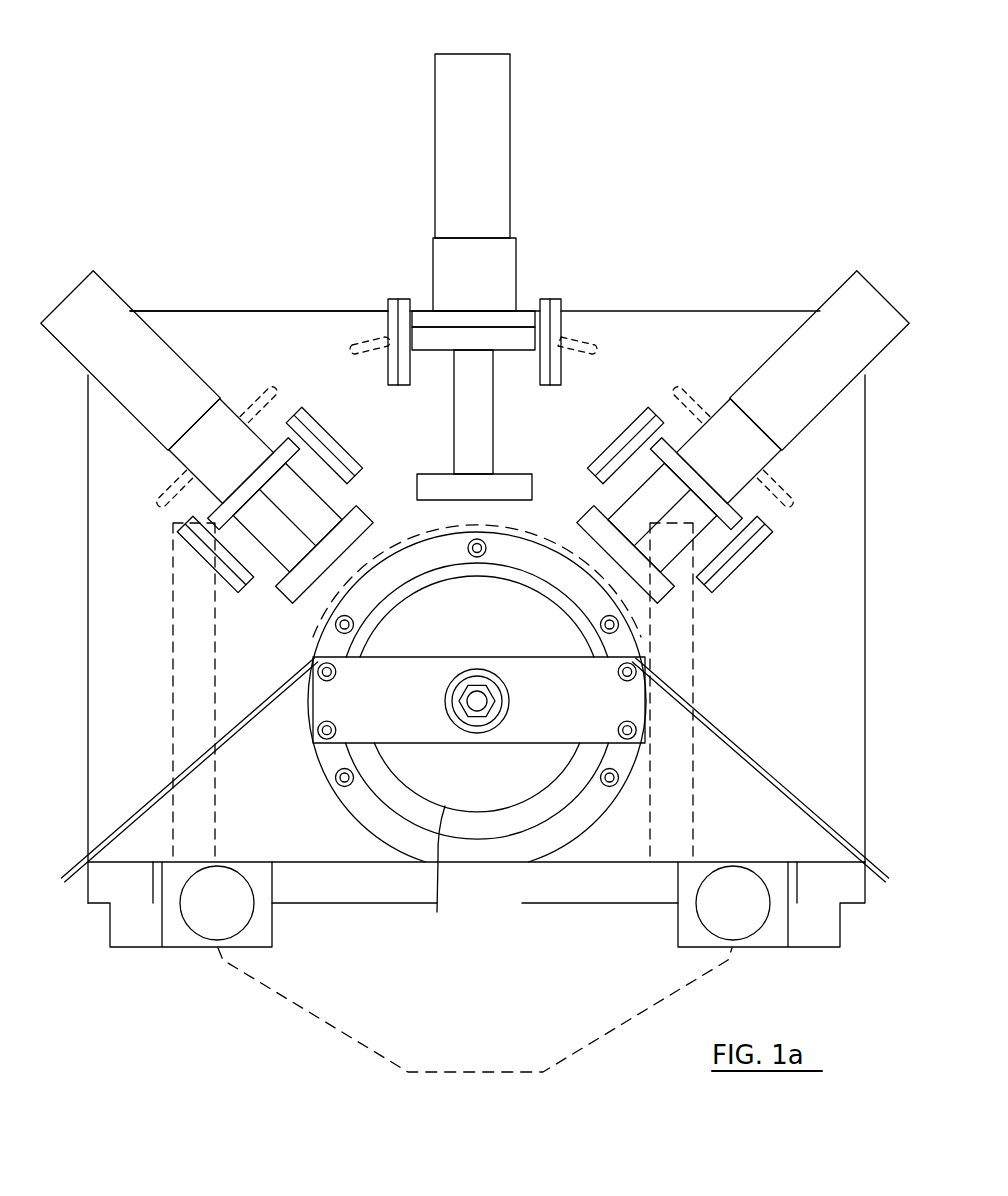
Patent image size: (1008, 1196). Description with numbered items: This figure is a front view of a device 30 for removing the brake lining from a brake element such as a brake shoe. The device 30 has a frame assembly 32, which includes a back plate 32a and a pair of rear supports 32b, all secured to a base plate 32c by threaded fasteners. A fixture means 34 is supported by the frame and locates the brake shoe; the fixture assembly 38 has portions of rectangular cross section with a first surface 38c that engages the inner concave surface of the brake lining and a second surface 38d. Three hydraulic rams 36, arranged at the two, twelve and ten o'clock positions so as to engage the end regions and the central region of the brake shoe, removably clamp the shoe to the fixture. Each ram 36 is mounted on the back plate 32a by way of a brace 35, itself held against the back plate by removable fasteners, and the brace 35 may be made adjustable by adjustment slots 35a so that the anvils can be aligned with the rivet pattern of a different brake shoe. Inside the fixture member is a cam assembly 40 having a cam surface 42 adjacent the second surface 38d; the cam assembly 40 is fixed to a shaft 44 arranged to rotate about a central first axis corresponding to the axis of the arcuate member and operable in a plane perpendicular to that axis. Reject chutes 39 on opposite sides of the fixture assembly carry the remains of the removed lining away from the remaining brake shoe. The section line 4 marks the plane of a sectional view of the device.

The section line 4- 4 is at (475, 520).
The device 30 is at (672, 175).
The frame assembly 32 is at (238, 298).
The back plate 32a is at (636, 323).
The rear supports 32b is at (685, 653).
The base plate 32c is at (855, 892).
The fixture means 34 is at (343, 820).
The brace 35 is at (364, 325).
The adjustment slots 35a is at (254, 395).
The hydraulic rams 36 is at (433, 150).
The fixture assembly 38 is at (588, 822).
The first surface 38c is at (405, 538).
The second surface 38d is at (358, 631).
The reject chutes 39 is at (148, 805).
The cam assembly 40 is at (519, 780).
The cam surface 42 is at (434, 874).
The shaft 44 is at (482, 690).